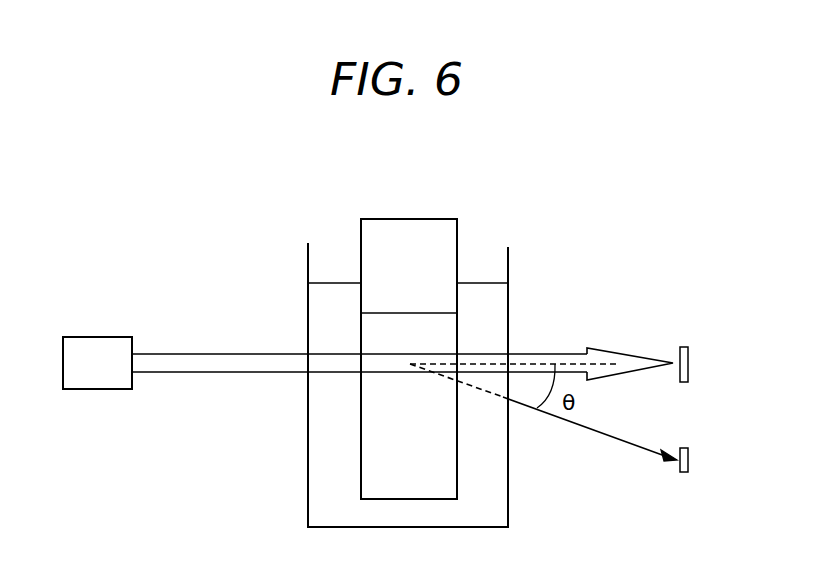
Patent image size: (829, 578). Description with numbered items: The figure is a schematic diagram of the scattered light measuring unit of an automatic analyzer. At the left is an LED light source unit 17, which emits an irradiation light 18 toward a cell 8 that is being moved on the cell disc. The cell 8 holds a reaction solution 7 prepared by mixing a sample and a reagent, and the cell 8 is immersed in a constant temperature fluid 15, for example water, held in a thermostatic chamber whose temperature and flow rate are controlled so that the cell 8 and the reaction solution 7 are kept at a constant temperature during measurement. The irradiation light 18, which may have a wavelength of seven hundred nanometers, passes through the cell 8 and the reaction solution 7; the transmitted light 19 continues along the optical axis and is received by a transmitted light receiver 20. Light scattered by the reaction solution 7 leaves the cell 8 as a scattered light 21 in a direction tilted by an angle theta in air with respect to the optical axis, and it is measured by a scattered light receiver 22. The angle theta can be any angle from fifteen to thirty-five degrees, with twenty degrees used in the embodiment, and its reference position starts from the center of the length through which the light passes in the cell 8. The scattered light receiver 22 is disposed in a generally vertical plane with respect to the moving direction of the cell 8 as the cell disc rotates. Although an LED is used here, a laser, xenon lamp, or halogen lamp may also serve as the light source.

The reaction solution 7 is at (419, 313).
The cell 8 is at (444, 219).
The constant temperature fluid 15 is at (342, 300).
The LED light source unit 17 is at (85, 337).
The irradiation light 18 is at (208, 354).
The transmitted light 19 is at (598, 354).
The transmitted light receiver 20 is at (688, 360).
The scattered light 21 is at (593, 432).
The scattered light receiver 22 is at (688, 462).